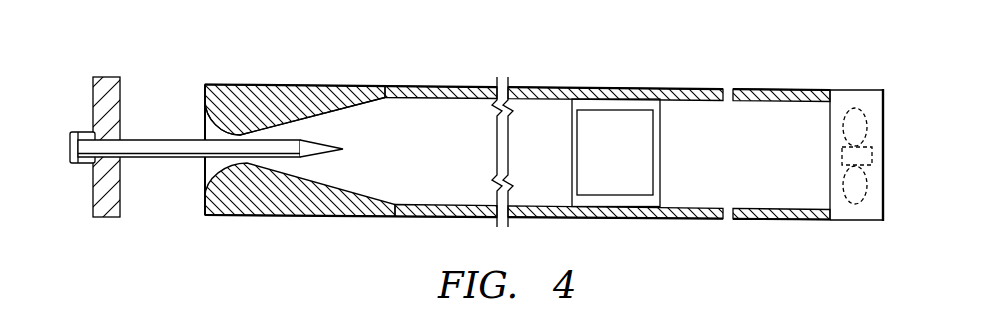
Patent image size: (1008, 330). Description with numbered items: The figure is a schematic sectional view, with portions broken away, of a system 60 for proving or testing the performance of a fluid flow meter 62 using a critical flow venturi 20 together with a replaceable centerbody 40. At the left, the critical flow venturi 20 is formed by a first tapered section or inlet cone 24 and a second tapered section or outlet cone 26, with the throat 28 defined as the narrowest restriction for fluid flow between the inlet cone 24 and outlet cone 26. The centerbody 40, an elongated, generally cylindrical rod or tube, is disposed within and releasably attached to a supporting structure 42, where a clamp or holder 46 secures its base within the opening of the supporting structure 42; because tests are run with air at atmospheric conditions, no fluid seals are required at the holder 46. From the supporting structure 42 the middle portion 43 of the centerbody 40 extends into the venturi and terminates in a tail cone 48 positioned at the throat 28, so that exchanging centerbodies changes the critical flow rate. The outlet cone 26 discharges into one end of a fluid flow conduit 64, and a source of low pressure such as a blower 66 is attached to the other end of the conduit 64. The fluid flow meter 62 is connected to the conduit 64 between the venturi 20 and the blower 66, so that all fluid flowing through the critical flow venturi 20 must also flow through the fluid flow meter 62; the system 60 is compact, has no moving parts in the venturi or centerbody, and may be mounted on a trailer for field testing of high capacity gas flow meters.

The critical flow venturi 20 is at (501, 128).
The first tapered section or inlet cone 24 is at (205, 122).
The second tapered section or outlet cone 26 is at (318, 115).
The throat 28 is at (210, 170).
The centerbody 40 is at (214, 143).
The supporting structure 42 is at (98, 92).
The middle portion 43 is at (163, 150).
The clamp or holder 46 is at (83, 167).
The tail cone 48 is at (335, 152).
The system 60 is at (528, 162).
The fluid flow meter 62 is at (575, 141).
The fluid flow conduit 64 is at (462, 87).
The blower 66 is at (855, 92).